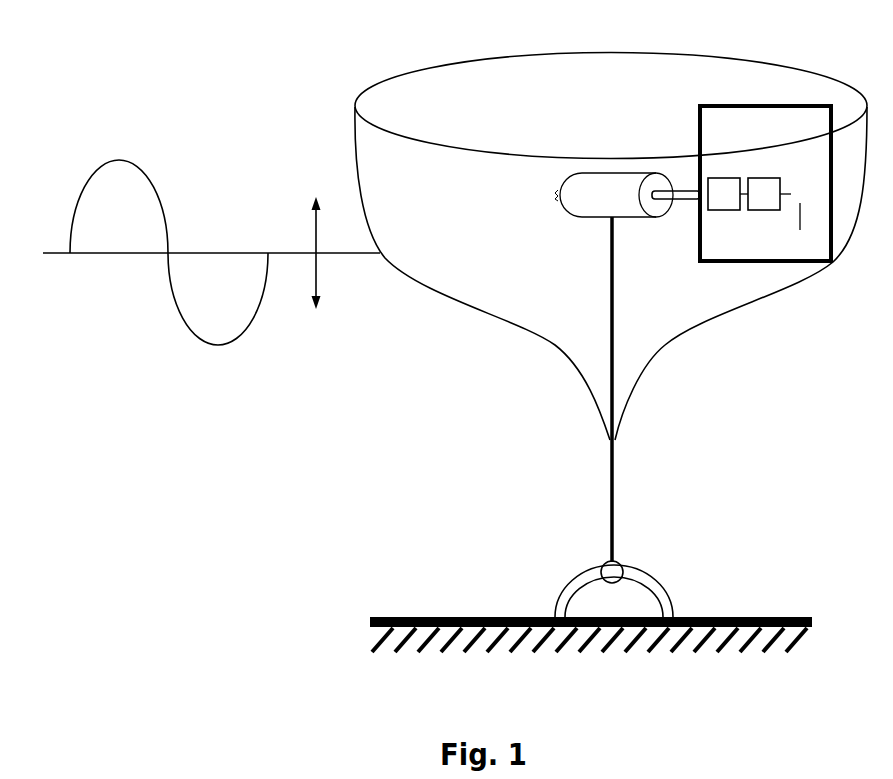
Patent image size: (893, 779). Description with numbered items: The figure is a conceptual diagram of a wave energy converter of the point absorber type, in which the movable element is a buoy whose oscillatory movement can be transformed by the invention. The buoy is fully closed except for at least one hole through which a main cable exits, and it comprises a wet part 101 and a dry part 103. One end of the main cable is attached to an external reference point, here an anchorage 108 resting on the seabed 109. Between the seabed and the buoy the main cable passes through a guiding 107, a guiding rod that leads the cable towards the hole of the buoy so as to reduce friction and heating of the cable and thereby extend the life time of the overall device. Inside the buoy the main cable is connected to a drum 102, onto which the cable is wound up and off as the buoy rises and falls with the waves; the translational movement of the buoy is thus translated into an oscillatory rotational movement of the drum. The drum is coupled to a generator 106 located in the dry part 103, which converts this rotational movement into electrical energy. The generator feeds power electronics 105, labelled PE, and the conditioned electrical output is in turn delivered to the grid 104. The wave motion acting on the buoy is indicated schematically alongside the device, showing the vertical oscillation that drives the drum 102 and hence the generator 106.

The wet part 101 is at (412, 110).
The drum 102 is at (568, 220).
The dry part 103 is at (695, 123).
The grid 104 is at (800, 203).
The power electronics 105 is at (765, 176).
The generator 106 is at (720, 176).
The guiding 107 is at (600, 437).
The anchorage 108 is at (593, 553).
The seabed 109 is at (722, 605).